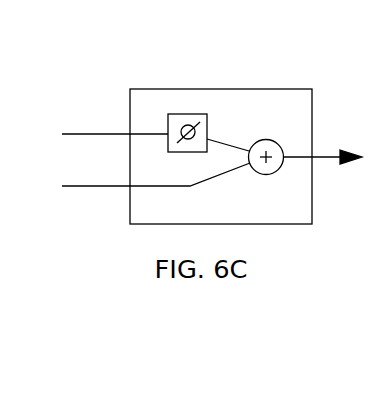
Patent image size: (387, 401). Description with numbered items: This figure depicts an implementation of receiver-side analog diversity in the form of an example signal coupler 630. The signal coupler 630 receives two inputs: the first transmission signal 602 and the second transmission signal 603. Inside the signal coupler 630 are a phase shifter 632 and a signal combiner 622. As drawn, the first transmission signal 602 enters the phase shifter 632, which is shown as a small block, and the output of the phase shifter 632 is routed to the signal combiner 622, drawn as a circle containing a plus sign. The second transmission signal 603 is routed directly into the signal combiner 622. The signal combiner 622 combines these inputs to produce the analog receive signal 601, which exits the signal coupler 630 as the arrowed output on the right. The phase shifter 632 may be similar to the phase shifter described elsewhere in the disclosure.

The analog receive signal 601 is at (340, 151).
The first transmission signal 602 is at (75, 133).
The second transmission signal 603 is at (82, 185).
The signal combiner 622 is at (266, 139).
The signal coupler 630 is at (145, 89).
The phase shifter 632 is at (202, 114).